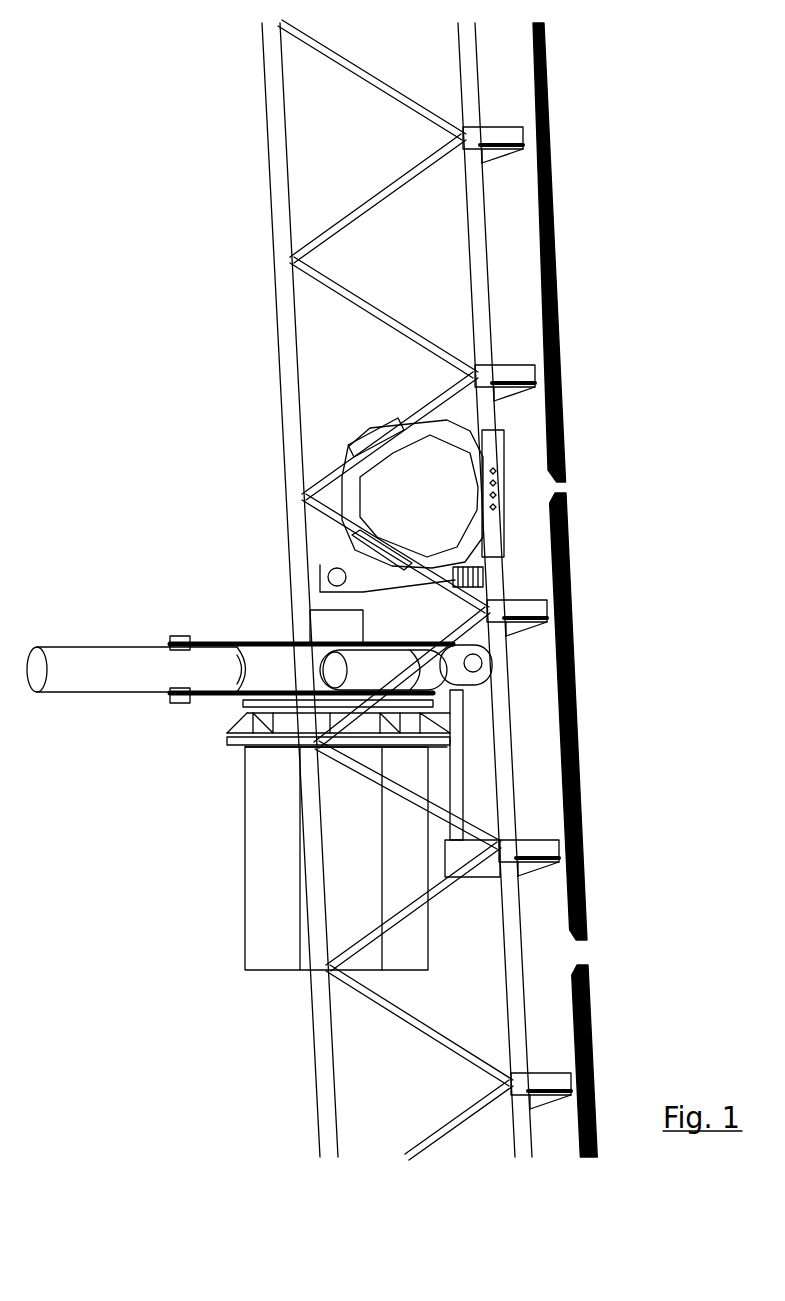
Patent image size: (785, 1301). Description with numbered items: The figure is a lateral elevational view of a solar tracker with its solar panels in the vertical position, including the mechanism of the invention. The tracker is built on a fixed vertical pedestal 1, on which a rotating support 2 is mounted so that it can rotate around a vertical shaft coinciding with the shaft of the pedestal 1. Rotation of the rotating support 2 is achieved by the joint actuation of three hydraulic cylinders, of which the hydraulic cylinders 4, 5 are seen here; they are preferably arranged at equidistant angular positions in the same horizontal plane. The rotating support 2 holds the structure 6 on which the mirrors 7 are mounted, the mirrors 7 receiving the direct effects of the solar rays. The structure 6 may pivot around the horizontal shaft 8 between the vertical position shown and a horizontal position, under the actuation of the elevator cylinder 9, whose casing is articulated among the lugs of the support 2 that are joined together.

The fixed vertical pedestal 1 is at (216, 856).
The rotating support 2 is at (221, 614).
The hydraulic cylinder 4 is at (103, 682).
The hydraulic cylinder 5 is at (375, 668).
The structure 6 is at (275, 228).
The mirrors 7 is at (552, 255).
The horizontal shaft 8 is at (323, 563).
The elevator cylinder 9 is at (477, 775).